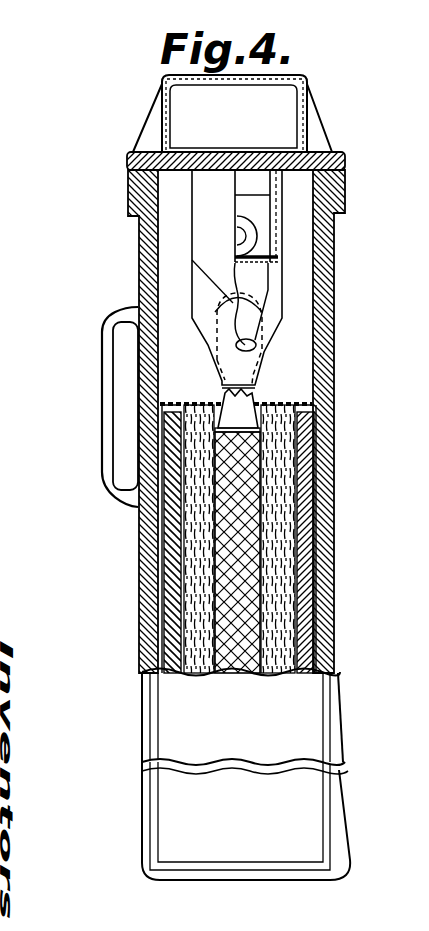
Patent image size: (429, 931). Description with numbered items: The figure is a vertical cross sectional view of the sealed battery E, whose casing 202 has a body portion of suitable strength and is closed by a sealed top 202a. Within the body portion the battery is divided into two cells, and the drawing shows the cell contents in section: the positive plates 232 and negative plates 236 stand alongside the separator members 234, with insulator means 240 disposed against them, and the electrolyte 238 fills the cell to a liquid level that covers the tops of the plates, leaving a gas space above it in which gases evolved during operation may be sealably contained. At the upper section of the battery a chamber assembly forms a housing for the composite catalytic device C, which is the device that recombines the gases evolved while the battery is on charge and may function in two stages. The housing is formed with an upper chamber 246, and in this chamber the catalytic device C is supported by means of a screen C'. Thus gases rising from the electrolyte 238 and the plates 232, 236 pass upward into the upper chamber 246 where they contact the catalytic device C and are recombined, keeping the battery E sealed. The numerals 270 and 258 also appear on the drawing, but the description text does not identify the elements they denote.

The battery E is at (330, 124).
The sealed top 202a is at (276, 148).
The battery casing 202 is at (322, 297).
The upper chamber 246 is at (292, 250).
The composite catalytic device C is at (301, 260).
The screen C' is at (260, 324).
The electrolyte 238 is at (303, 405).
The positive plates 232 is at (242, 470).
The separator members 234 is at (275, 527).
The insulator means 240 is at (313, 545).
The negative plates 236 is at (313, 610).
The element 270 is at (421, 460).
The element 258 is at (428, 593).